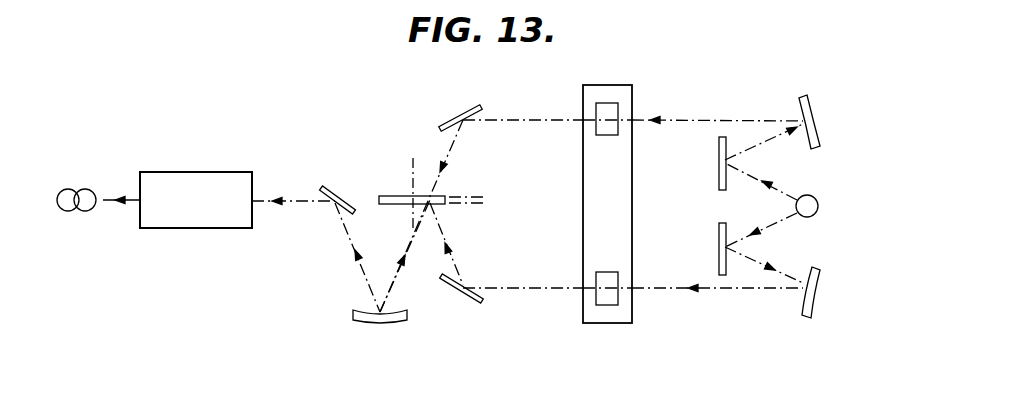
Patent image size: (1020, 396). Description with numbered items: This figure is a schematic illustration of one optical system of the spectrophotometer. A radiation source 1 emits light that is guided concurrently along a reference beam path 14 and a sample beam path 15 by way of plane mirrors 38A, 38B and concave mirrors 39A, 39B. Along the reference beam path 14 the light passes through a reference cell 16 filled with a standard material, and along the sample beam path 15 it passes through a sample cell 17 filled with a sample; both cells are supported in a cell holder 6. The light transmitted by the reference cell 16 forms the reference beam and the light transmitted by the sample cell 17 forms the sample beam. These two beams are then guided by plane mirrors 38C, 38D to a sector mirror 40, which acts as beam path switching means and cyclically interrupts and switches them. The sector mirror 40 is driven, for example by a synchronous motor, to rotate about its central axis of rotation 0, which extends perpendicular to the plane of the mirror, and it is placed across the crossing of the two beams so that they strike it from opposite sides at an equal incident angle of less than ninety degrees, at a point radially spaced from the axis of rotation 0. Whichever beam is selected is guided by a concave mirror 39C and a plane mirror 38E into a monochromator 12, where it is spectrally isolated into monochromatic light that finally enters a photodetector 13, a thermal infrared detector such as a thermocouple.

The radiation source 1 is at (818, 207).
The cell holder 6 is at (591, 196).
The monochromator 12 is at (222, 222).
The photodetector 13 is at (82, 212).
The reference beam path 14 is at (702, 118).
The sample beam path 15 is at (728, 291).
The reference cell 16 is at (598, 128).
The sample cell 17 is at (598, 283).
The plane mirror 38A is at (718, 160).
The plane mirror 38B is at (718, 236).
The plane mirror 38C is at (441, 126).
The plane mirror 38D is at (476, 302).
The plane mirror 38E is at (337, 186).
The concave mirror 39A is at (810, 97).
The concave mirror 39B is at (818, 283).
The concave mirror 39C is at (388, 323).
The sector mirror 40 is at (389, 206).
The axis of rotation 0 is at (412, 174).